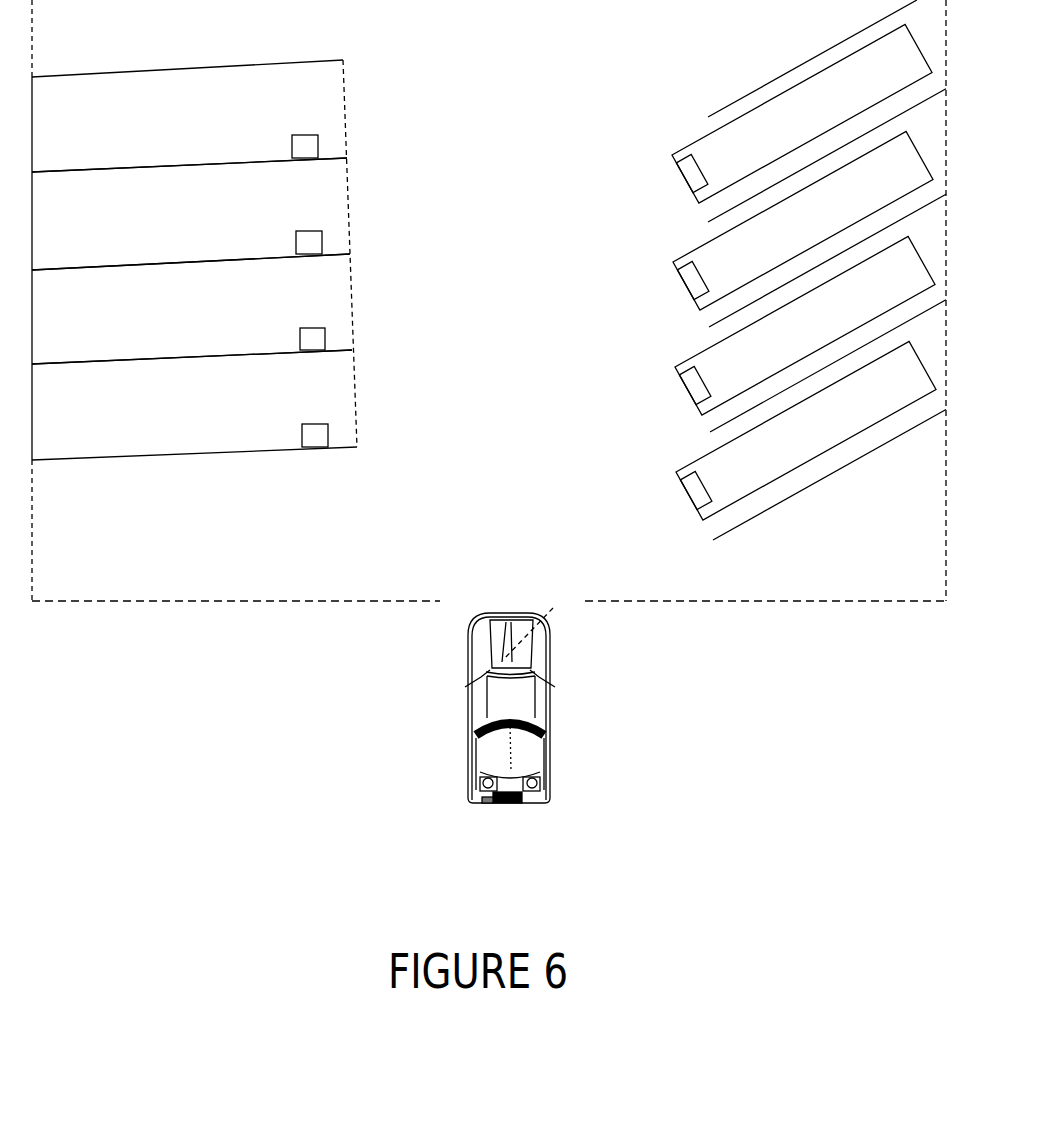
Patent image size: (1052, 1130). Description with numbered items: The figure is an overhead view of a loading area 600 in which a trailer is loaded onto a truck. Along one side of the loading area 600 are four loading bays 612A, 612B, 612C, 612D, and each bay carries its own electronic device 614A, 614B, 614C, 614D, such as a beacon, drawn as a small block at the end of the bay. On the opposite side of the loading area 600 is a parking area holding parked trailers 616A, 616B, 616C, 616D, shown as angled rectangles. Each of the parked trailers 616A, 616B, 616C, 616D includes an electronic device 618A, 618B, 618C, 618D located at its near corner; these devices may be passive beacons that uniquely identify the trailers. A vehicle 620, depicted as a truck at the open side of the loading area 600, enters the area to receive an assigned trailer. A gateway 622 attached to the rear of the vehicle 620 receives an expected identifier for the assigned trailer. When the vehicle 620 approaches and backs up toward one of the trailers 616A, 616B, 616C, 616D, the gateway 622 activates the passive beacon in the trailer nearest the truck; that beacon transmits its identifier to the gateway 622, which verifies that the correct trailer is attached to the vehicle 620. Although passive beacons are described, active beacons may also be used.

The loading area 600 is at (92, 603).
The loading bay 612A is at (332, 118).
The loading bay 612B is at (335, 215).
The loading bay 612C is at (340, 312).
The loading bay 612D is at (342, 408).
The electronic device 614A is at (318, 135).
The electronic device 614B is at (322, 231).
The electronic device 614C is at (325, 328).
The electronic device 614D is at (328, 424).
The parked trailer 616A is at (712, 140).
The parked trailer 616B is at (713, 247).
The parked trailer 616C is at (715, 352).
The parked trailer 616D is at (717, 457).
The electronic device 618A is at (690, 178).
The electronic device 618B is at (691, 284).
The electronic device 618C is at (693, 389).
The electronic device 618D is at (694, 494).
The vehicle 620 is at (540, 668).
The gateway 622 is at (513, 806).